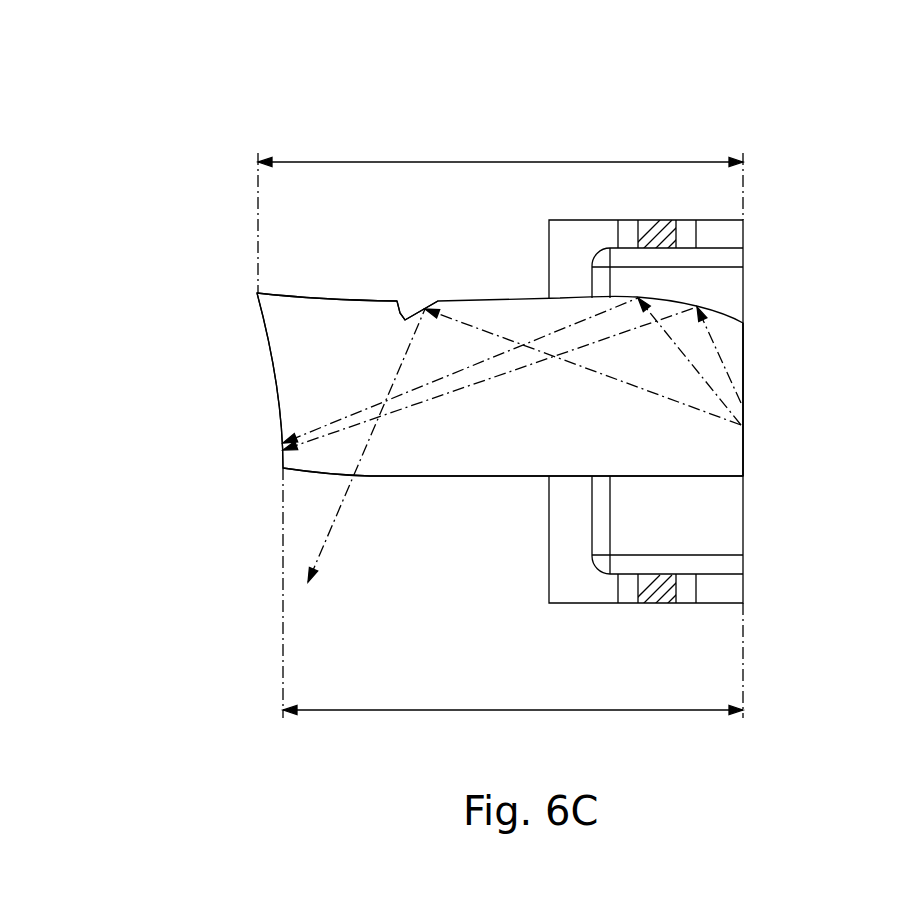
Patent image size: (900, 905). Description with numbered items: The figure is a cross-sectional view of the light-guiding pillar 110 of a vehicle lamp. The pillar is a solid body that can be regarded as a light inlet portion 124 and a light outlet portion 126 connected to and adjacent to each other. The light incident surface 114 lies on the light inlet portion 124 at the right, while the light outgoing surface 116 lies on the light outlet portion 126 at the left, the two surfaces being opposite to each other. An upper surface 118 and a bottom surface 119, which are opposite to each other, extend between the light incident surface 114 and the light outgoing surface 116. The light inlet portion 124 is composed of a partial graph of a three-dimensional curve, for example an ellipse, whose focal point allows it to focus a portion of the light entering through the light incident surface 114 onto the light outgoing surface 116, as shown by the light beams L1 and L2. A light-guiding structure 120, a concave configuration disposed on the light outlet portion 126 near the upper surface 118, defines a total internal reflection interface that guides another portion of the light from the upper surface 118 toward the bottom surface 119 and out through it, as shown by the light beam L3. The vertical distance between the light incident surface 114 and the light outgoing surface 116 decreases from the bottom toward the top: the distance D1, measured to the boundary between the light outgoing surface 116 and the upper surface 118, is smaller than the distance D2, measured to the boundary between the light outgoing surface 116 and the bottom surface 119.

The light-guiding pillar 110 is at (67, 62).
The light incident surface 114 is at (745, 360).
The light outgoing surface 116 is at (265, 332).
The upper surface 118 is at (307, 295).
The bottom surface 119 is at (442, 477).
The light-guiding structure 120 is at (408, 308).
The light inlet portion 124 is at (725, 457).
The light outlet portion 126 is at (392, 440).
The light beam L1 is at (508, 352).
The light beam L2 is at (480, 383).
The light beam L3 is at (337, 515).
The distance D1 is at (500, 214).
The distance D2 is at (513, 593).